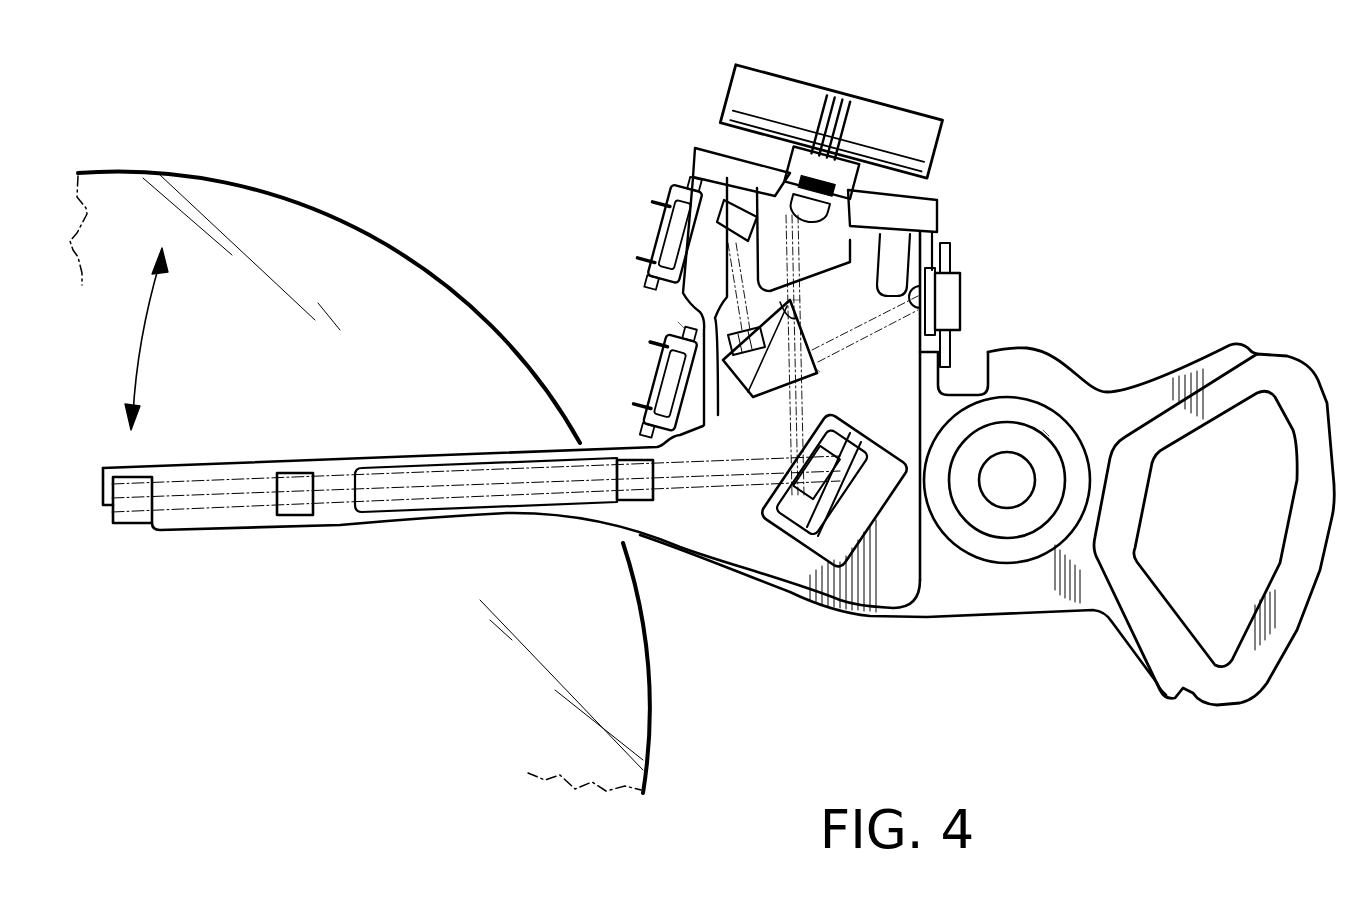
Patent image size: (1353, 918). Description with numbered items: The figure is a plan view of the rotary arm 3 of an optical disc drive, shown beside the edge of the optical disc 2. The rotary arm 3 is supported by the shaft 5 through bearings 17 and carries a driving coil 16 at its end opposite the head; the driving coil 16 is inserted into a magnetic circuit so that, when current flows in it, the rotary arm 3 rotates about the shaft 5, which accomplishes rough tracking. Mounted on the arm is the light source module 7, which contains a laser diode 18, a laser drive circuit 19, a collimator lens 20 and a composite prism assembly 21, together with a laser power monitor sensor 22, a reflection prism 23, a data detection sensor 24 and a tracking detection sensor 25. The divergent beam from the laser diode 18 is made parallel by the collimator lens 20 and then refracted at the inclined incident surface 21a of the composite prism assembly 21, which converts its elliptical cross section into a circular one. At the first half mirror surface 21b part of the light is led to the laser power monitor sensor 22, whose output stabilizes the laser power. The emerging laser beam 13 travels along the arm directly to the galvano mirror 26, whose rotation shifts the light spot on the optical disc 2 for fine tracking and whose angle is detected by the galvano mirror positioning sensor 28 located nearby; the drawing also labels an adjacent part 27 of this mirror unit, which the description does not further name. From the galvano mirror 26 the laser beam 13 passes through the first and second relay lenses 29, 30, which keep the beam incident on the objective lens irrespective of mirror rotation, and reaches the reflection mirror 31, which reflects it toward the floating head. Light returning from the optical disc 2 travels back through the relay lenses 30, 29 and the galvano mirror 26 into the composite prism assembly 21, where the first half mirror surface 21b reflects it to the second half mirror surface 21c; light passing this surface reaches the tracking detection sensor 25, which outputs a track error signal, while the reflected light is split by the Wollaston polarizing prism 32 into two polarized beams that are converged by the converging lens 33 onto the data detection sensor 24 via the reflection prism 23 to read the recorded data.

The optical disc 2 is at (272, 195).
The rotary arm 3 is at (454, 532).
The shaft 5 is at (1000, 422).
The light source module 7 is at (596, 115).
The laser beam 13 is at (237, 465).
The driving coil 16 is at (1260, 352).
The bearings 17 is at (1047, 433).
The laser diode 18 is at (800, 158).
The laser drive circuit 19 is at (883, 153).
The collimator lens 20 is at (822, 217).
The composite prism assembly 21 is at (808, 333).
The incident surface 21a is at (797, 298).
The first half mirror surface 21b is at (820, 370).
The second half mirror surface 21c is at (748, 380).
The laser power monitor sensor 22 is at (960, 280).
The reflection prism 23 is at (722, 220).
The data detection sensor 24 is at (642, 222).
The tracking detection sensor 25 is at (638, 392).
The galvano mirror 26 is at (815, 485).
The sensor housing 27 is at (797, 527).
The galvano mirror positioning sensor 28 is at (850, 510).
The first relay lens 29 is at (622, 505).
The second relay lens 30 is at (289, 518).
The reflection mirror 31 is at (127, 527).
The Wollaston polarizing prism 32 is at (680, 325).
The converging lens 33 is at (683, 300).